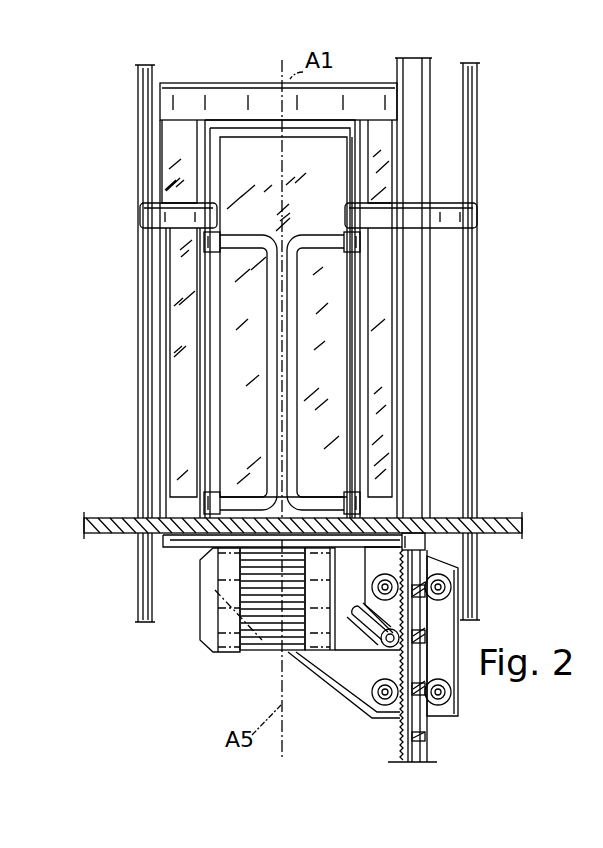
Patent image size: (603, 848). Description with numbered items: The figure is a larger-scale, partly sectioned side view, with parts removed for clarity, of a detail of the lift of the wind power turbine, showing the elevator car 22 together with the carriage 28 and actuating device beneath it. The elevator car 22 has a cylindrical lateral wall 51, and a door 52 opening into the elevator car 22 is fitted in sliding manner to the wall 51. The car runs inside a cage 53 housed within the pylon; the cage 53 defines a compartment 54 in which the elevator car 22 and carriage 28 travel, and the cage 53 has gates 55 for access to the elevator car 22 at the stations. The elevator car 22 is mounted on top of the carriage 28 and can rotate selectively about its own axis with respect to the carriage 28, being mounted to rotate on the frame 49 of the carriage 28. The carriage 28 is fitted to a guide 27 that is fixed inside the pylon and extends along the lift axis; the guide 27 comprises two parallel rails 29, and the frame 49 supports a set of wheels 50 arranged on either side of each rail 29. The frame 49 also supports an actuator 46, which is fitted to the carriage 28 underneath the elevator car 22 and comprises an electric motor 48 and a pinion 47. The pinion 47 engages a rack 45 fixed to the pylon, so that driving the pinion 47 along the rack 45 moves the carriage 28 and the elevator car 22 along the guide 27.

The elevator car 22 is at (348, 77).
The cylindrical lateral wall 51 is at (372, 103).
The door 52 is at (313, 180).
The compartment 54 is at (441, 199).
The gate 55 is at (317, 371).
The cage 53 is at (481, 381).
The frame 49 is at (183, 545).
The rail 29 is at (424, 543).
The electric motor 48 is at (227, 641).
The carriage 28 is at (218, 674).
The actuator 46 is at (263, 679).
The guide 27 is at (440, 621).
The wheels 50 is at (444, 604).
The pinion 47 is at (385, 645).
The rack 45 is at (400, 736).